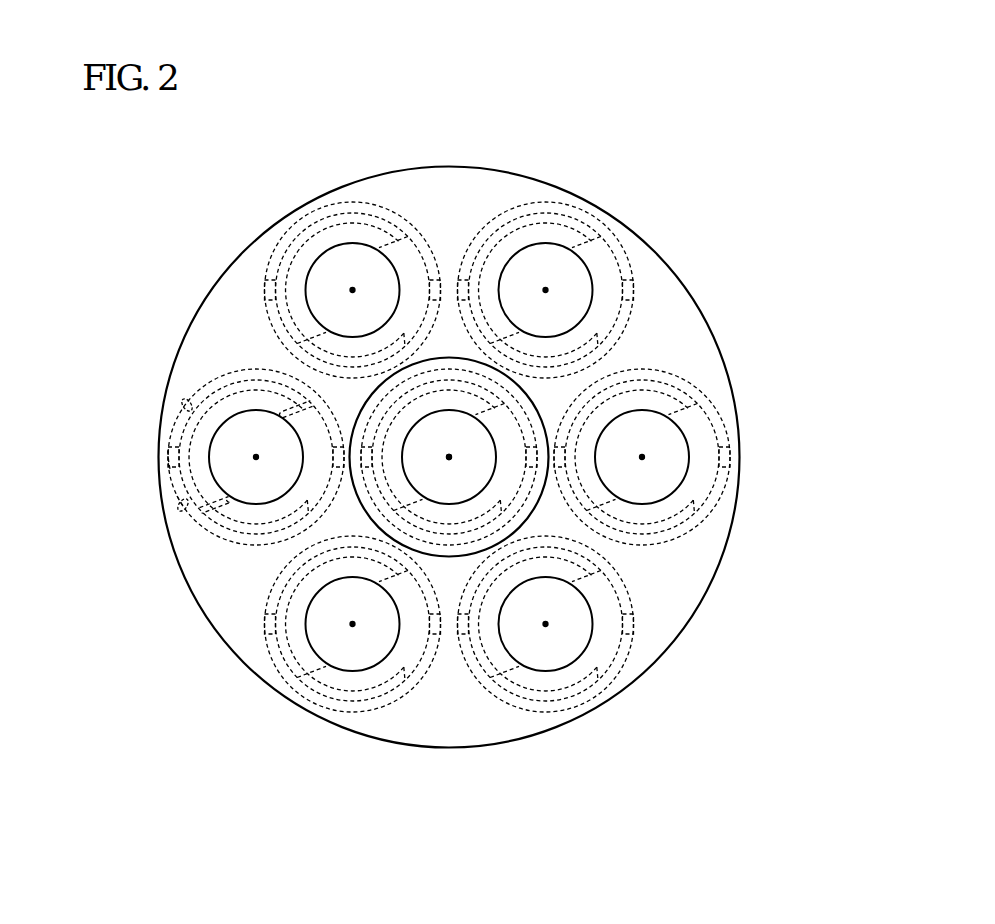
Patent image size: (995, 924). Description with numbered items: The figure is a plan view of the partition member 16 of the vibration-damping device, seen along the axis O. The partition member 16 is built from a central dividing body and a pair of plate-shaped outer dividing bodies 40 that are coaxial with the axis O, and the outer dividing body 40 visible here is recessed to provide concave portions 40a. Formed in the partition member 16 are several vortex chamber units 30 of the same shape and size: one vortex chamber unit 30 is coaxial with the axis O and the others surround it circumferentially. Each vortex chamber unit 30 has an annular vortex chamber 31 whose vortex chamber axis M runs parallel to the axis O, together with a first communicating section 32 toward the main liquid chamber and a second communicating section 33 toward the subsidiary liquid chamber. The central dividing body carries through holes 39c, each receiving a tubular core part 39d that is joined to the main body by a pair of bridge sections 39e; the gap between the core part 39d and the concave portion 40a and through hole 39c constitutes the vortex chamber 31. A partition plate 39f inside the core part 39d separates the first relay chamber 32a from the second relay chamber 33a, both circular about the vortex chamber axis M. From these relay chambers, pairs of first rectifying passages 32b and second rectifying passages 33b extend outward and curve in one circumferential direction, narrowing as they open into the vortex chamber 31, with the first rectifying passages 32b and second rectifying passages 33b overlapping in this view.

The partition member 16 is at (651, 108).
The vortex chamber unit 30 is at (414, 518).
The vortex chamber 31 is at (256, 580).
The first communicating section 32 is at (189, 612).
The second communicating section 33 is at (189, 592).
The first relay chamber 32a is at (221, 571).
The second relay chamber 33a is at (221, 571).
The first rectifying passage 32b is at (189, 576).
The second rectifying passage 33b is at (189, 576).
The through hole 39c is at (123, 431).
The core part 39d is at (198, 460).
The bridge section 39e is at (111, 434).
The partition plate 39f is at (205, 395).
The outer dividing body 40 is at (683, 332).
The concave portion 40a is at (126, 537).
The vortex chamber axis M is at (546, 289).
The axis O is at (449, 455).